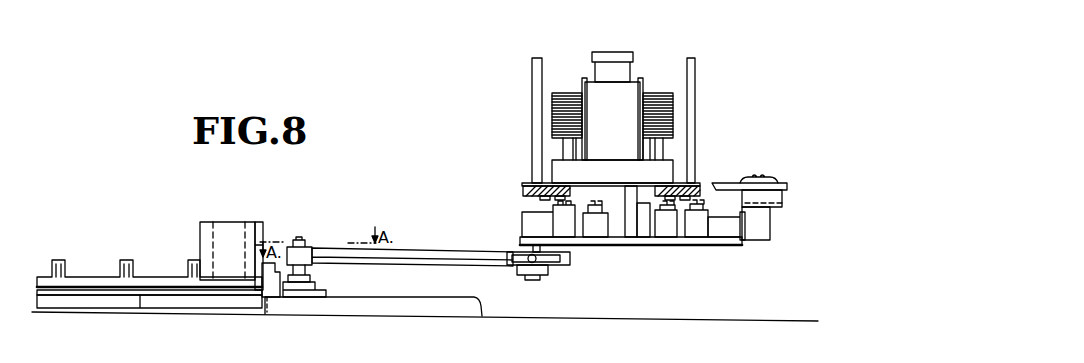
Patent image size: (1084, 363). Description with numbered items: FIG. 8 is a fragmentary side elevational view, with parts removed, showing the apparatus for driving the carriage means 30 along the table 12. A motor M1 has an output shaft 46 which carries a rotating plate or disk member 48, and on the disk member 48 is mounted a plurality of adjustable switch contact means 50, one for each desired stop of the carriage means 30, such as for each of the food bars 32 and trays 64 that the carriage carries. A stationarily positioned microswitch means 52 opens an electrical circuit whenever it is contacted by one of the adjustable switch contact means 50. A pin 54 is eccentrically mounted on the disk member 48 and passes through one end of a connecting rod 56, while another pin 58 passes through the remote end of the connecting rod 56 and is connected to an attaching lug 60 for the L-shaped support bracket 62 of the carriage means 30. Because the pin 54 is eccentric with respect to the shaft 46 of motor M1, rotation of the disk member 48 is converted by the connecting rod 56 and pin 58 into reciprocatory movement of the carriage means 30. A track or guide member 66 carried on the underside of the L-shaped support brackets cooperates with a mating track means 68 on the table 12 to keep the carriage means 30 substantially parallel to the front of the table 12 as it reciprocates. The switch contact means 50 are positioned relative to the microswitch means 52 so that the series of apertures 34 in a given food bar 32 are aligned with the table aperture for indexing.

The table 12 is at (747, 320).
The carriage means 30 is at (190, 243).
The food bar 32 is at (258, 243).
The apertures 34 is at (222, 238).
The output shaft 46 is at (628, 196).
The rotating plate or disk member 48 is at (700, 243).
The adjustable switch contact means 50 is at (525, 226).
The microswitch means 52 is at (760, 218).
The pin 54 is at (530, 270).
The connecting rod 56 is at (412, 260).
The pin 58 is at (298, 246).
The attaching lug 60 is at (312, 297).
The L-shaped support bracket 62 is at (263, 283).
The tray members 64 is at (97, 272).
The track or guide member 66 is at (123, 305).
The mating track means 68 is at (448, 308).
The motor M1 is at (652, 78).